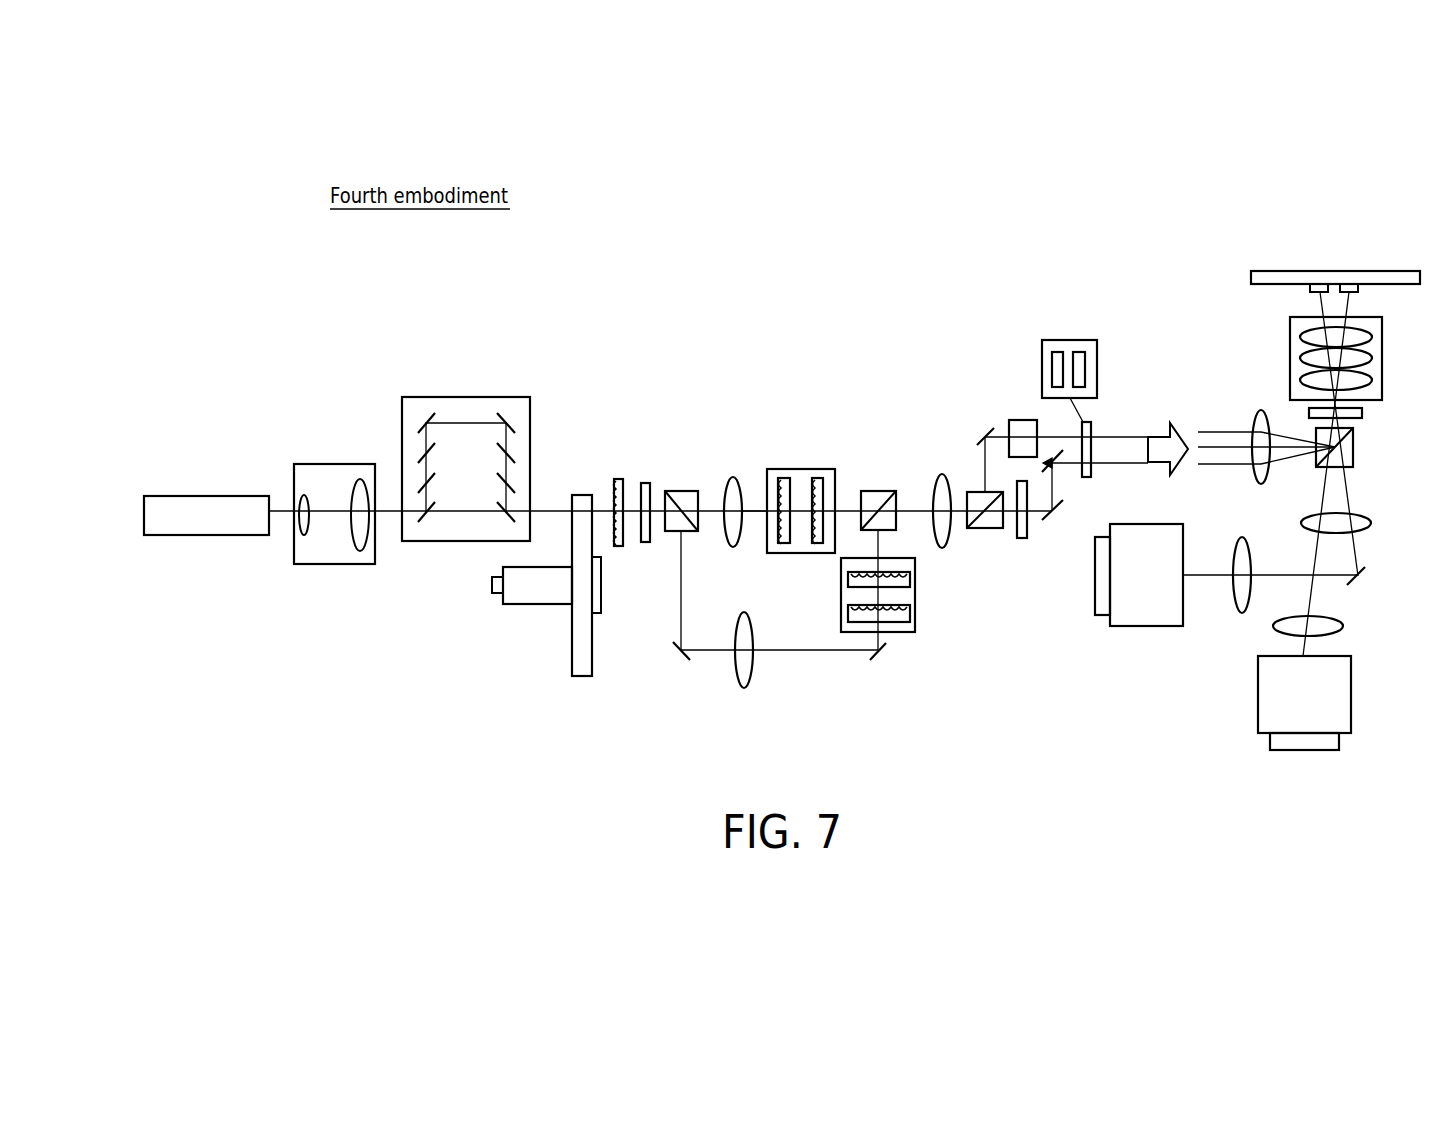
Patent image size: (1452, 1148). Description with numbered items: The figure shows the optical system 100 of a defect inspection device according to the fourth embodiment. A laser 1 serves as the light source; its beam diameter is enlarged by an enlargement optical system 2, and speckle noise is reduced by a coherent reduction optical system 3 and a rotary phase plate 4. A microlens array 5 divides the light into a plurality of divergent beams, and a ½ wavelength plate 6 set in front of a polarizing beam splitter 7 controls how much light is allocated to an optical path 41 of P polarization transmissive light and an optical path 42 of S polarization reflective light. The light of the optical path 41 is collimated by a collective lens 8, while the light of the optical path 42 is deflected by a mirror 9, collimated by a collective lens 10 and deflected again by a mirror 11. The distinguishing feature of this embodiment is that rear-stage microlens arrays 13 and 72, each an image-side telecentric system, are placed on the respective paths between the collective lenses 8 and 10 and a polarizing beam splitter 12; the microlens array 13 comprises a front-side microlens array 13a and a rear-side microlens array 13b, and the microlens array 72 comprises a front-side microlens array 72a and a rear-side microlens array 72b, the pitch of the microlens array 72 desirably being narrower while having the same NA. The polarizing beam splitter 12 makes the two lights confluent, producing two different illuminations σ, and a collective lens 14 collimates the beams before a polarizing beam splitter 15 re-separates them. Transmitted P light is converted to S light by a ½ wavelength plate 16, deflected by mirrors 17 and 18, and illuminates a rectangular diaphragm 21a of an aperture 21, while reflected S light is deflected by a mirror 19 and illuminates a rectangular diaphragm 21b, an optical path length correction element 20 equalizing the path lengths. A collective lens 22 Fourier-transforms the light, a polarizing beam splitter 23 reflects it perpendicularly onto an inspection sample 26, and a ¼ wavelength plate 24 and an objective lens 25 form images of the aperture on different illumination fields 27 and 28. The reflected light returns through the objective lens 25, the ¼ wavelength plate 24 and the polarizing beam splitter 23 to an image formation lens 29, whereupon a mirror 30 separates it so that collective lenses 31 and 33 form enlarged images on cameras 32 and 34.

The laser 1 is at (238, 495).
The enlargement optical system 2 is at (331, 464).
The coherent reduction optical system 3 is at (490, 397).
The rotary phase plate 4 is at (531, 605).
The microlens array 5 is at (614, 479).
The ½ wavelength plate 6 is at (645, 483).
The polarizing beam splitter 7 is at (683, 491).
The collective lens 8 is at (733, 477).
The mirror 9 is at (688, 664).
The collective lens 10 is at (745, 690).
The mirror 11 is at (880, 664).
The polarizing beam splitter 12 is at (878, 491).
The microlens array 13 is at (797, 507).
The front-side microlens array 13a is at (785, 544).
The rear-side microlens array 13b is at (818, 544).
The collective lens 14 is at (941, 473).
The polarizing beam splitter 15 is at (985, 530).
The ½ wavelength plate 16 is at (1022, 540).
The mirror 17 is at (1055, 524).
The mirror 18 is at (1060, 470).
The mirror 19 is at (980, 430).
The optical path length correction element 20 is at (1018, 420).
The aperture 21 is at (1066, 375).
The rectangular diaphragm 21a is at (1055, 340).
The rectangular diaphragm 21b is at (1083, 340).
The collective lens 22 is at (1255, 416).
The polarizing beam splitter 23 is at (1353, 450).
The ¼ wavelength plate 24 is at (1362, 413).
The objective lens 25 is at (1290, 359).
The inspection sample 26 is at (1360, 271).
The illumination field 27 is at (1310, 291).
The illumination field 28 is at (1358, 291).
The image formation lens 29 is at (1371, 523).
The mirror 30 is at (1360, 583).
The collective lens 31 is at (1238, 614).
The camera 32 is at (1145, 627).
The collective lens 33 is at (1344, 626).
The camera 34 is at (1351, 690).
The optical path 41 is at (753, 516).
The optical path 42 is at (681, 580).
The microlens array 72 is at (879, 590).
The front-side microlens array 72a is at (915, 616).
The rear-side microlens array 72b is at (915, 578).
The optical system 100 is at (868, 380).